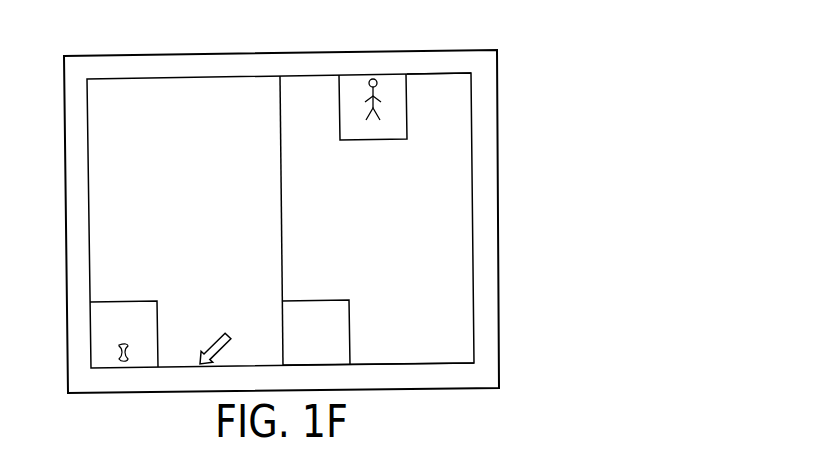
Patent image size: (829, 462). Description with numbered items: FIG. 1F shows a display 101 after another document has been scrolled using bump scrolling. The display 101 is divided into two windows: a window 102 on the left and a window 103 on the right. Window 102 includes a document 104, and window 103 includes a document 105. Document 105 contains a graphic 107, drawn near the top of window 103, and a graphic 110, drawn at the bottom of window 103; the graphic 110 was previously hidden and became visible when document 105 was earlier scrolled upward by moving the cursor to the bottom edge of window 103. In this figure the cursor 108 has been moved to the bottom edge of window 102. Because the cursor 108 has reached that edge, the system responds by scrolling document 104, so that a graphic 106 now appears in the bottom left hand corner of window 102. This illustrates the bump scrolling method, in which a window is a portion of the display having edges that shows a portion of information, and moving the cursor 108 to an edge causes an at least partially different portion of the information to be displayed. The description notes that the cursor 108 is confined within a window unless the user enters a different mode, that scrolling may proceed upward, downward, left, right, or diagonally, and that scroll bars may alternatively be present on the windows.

The display 101 is at (243, 52).
The window 102 is at (137, 78).
The window 103 is at (425, 73).
The document 104 is at (198, 219).
The document 105 is at (402, 219).
The graphic 106 is at (140, 329).
The graphic 107 is at (391, 137).
The cursor 108 is at (222, 337).
The graphic 110 is at (333, 357).